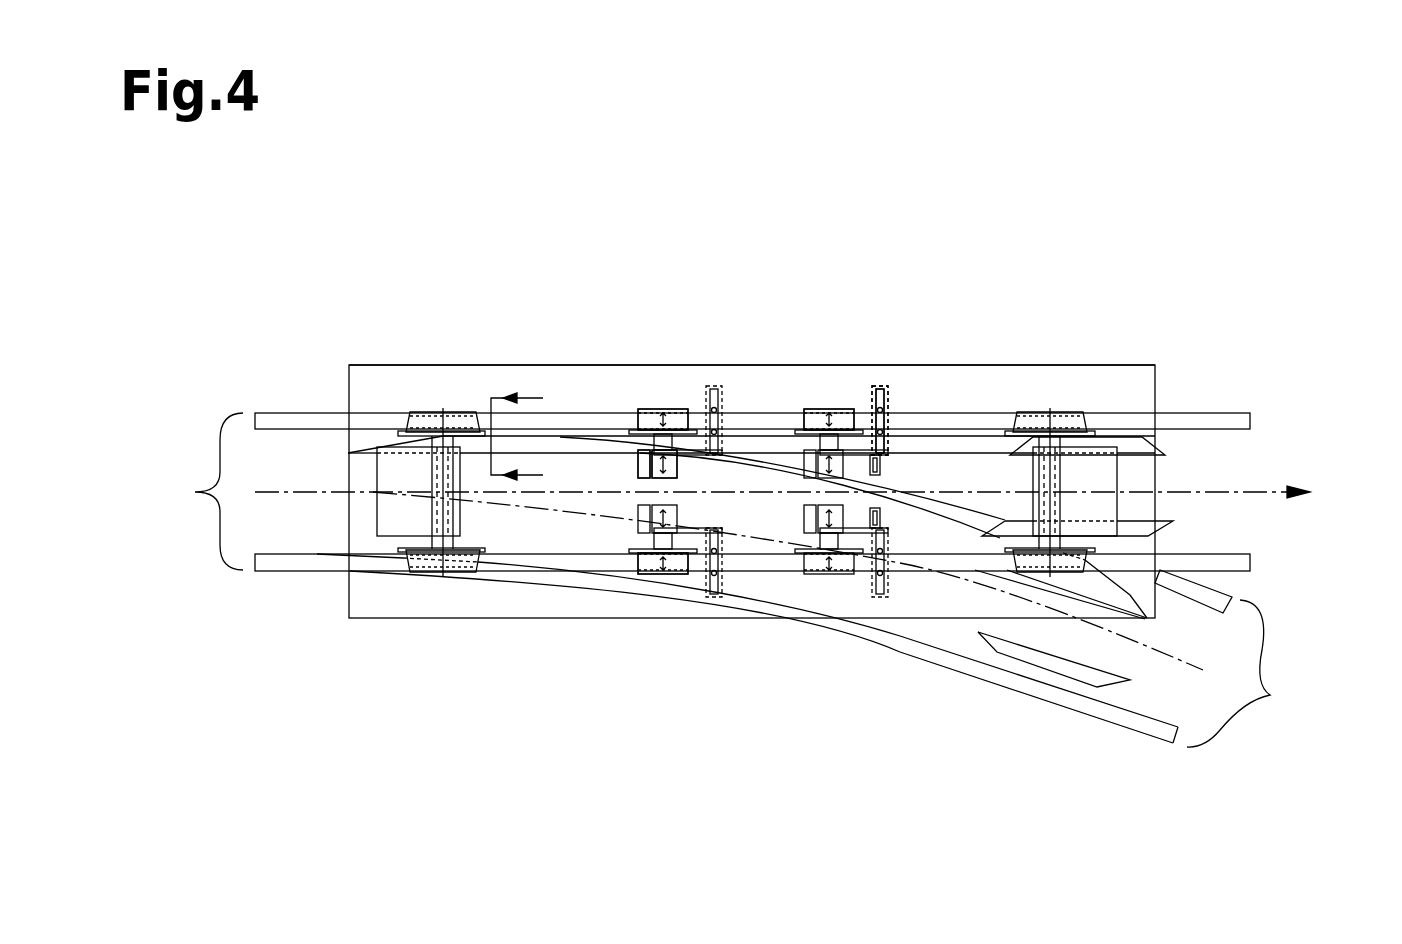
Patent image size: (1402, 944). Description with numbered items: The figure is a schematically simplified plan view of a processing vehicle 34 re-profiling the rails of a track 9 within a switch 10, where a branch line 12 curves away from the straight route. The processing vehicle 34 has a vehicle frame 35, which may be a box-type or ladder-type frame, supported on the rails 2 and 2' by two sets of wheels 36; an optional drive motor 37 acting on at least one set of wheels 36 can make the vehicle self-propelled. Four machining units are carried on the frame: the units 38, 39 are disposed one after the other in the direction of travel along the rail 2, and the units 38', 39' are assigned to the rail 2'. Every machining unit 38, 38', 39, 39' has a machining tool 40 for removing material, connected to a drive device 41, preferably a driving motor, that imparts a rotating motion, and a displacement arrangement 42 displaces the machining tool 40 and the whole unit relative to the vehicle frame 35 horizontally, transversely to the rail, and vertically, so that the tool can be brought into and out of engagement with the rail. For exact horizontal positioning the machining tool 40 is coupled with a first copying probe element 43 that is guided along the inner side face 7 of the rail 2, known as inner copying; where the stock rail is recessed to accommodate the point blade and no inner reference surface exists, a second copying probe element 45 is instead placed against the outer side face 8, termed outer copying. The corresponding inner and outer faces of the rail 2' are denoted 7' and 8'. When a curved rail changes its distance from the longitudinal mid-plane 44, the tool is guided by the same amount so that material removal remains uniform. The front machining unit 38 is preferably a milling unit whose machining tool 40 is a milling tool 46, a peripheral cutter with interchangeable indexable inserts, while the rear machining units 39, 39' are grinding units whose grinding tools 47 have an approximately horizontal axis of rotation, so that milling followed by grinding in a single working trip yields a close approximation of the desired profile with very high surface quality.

The rail 2 is at (760, 414).
The rail 2' is at (779, 617).
The inner side face 7 is at (751, 355).
The switch blade 7' is at (1022, 649).
The outer side face 8 is at (853, 407).
The switch blade 8' is at (1051, 662).
The track 9 is at (188, 493).
The switch 10 is at (1100, 225).
The branch line 12 is at (1270, 697).
The processing vehicle 34 is at (598, 320).
The vehicle frame 35 is at (378, 375).
The sets of wheels 36 is at (430, 412).
The drive motor 37 is at (383, 478).
The machining unit 38 is at (841, 324).
The machining unit 38' is at (782, 650).
The machining unit 39 is at (652, 323).
The machining unit 39' is at (617, 649).
The machining tool 40 is at (677, 425).
The drive device 41 is at (655, 462).
The displacement arrangement 42 is at (632, 443).
The first copying probe element 43 is at (882, 425).
The longitudinal mid-plane 44 is at (1188, 490).
The second copying probe element 45 is at (880, 420).
The milling tool 46 is at (829, 419).
The grinding tool 47 is at (663, 563).